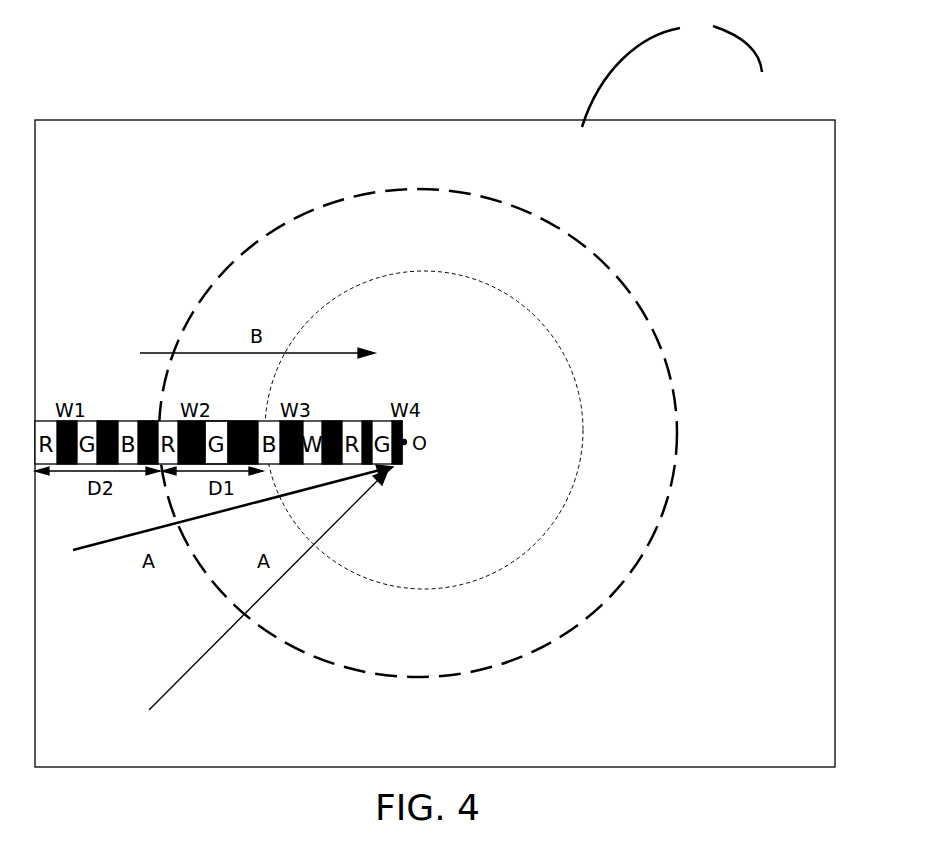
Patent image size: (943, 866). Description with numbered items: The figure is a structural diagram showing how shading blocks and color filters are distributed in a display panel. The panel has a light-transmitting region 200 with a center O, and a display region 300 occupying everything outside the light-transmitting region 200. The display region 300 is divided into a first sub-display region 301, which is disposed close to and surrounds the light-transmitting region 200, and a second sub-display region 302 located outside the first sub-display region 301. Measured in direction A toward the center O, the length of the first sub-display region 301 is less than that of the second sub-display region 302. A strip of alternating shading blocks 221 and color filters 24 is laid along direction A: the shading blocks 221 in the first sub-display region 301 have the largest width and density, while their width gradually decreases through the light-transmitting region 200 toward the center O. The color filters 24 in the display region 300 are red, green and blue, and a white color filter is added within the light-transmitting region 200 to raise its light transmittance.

The display region 300 is at (672, 67).
The first sub-display region 301 is at (498, 230).
The second sub-display region 302 is at (650, 165).
The light-transmitting region 200 is at (379, 320).
The shading blocks 221 is at (108, 422).
The color filter 24 is at (216, 423).